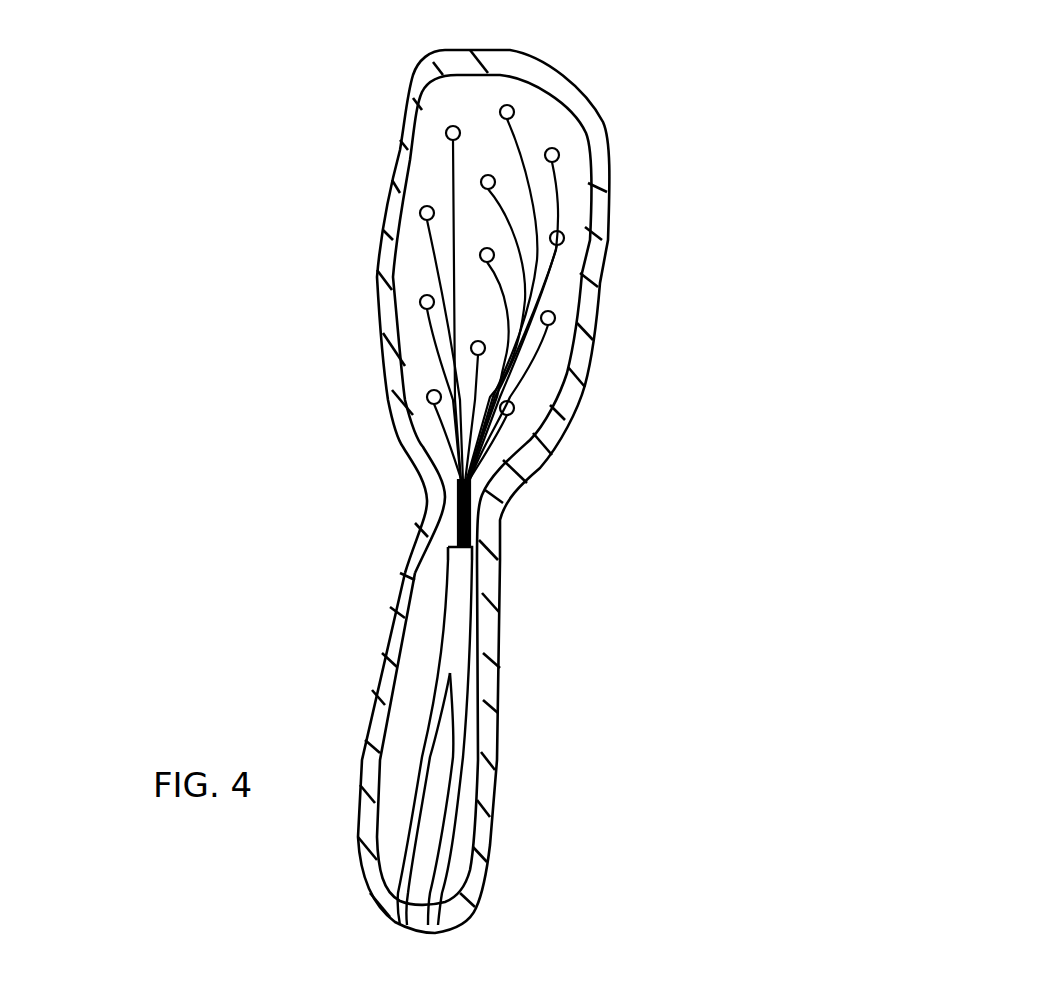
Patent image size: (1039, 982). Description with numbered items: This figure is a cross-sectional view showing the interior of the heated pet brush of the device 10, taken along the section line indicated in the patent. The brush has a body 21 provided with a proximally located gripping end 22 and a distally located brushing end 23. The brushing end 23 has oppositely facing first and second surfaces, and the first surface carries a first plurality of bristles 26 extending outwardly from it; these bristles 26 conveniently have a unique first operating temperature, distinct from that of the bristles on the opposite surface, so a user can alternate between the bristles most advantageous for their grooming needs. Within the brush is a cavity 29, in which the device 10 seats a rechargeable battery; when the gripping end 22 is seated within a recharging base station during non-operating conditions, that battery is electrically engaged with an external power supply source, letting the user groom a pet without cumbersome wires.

The device 10 is at (935, 203).
The body 21 is at (610, 210).
The gripping end 22 is at (493, 708).
The brushing end 23 is at (570, 384).
The first plurality of bristles 26 is at (442, 166).
The cavity 29 is at (410, 688).